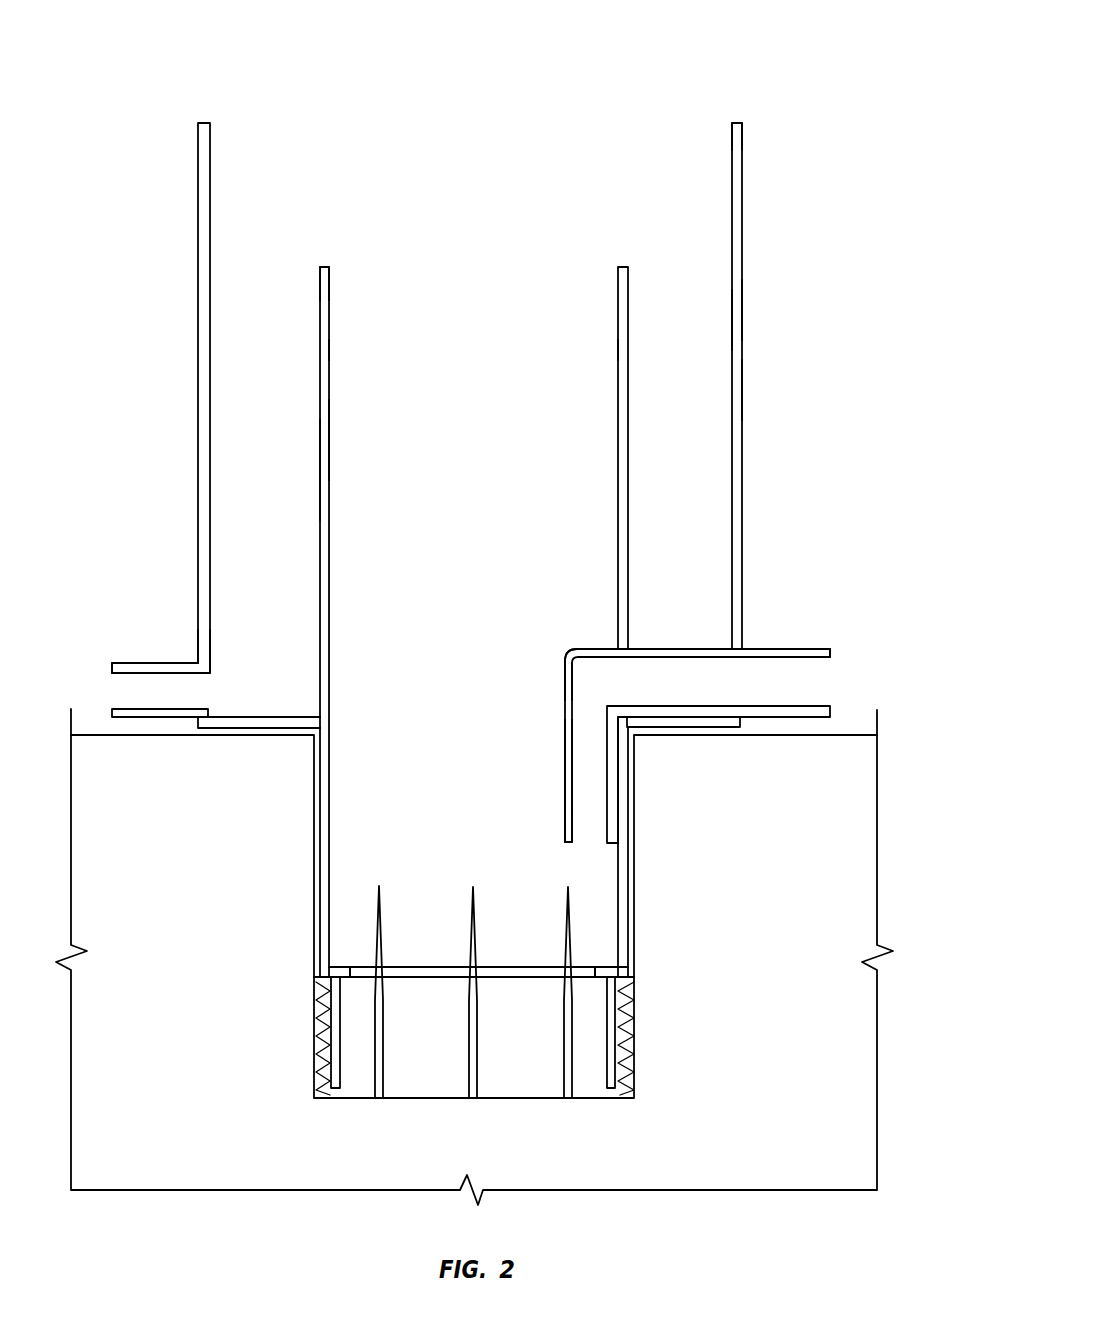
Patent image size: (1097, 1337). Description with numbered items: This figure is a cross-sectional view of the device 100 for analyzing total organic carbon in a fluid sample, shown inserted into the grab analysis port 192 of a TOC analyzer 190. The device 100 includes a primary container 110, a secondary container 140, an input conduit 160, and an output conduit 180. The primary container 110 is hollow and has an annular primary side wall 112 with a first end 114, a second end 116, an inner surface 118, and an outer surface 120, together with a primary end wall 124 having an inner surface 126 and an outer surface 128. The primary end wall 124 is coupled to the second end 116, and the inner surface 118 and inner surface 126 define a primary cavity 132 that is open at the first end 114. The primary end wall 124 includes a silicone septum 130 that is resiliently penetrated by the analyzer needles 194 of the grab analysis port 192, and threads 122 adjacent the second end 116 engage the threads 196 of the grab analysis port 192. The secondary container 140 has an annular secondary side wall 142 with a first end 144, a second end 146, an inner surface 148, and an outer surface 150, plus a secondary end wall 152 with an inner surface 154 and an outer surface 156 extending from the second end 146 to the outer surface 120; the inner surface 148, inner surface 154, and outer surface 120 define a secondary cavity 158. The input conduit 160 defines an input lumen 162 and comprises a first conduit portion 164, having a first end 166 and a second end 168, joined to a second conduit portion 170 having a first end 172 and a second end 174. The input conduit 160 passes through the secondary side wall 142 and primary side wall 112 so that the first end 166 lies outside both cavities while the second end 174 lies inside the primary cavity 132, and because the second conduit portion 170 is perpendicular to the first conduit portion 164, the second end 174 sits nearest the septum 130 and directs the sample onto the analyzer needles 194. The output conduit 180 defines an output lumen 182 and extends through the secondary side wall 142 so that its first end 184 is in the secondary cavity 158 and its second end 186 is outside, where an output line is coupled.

The device 100 is at (862, 94).
The primary container 110 is at (631, 253).
The primary side wall 112 is at (334, 335).
The first end 114 is at (326, 267).
The second end 116 is at (630, 973).
The inner surface 118 is at (330, 436).
The outer surface 120 is at (319, 461).
The threads 122 is at (331, 1011).
The primary end wall 124 is at (341, 966).
The inner surface 126 is at (600, 975).
The outer surface 128 is at (614, 1008).
The septum 130 is at (435, 964).
The primary cavity 132 is at (463, 346).
The secondary container 140 is at (768, 199).
The secondary side wall 142 is at (746, 388).
The first end 144 is at (738, 122).
The second end 146 is at (741, 722).
The inner surface 148 is at (731, 317).
The outer surface 150 is at (743, 305).
The secondary end wall 152 is at (256, 716).
The inner surface 154 is at (300, 717).
The outer surface 156 is at (273, 729).
The secondary cavity 158 is at (247, 543).
The input conduit 160 is at (780, 586).
The input lumen 162 is at (675, 681).
The first conduit portion 164 is at (796, 646).
The first end 166 is at (831, 652).
The second end 168 is at (585, 650).
The second conduit portion 170 is at (560, 769).
The first end 172 is at (565, 676).
The second end 174 is at (563, 846).
The output conduit 180 is at (158, 651).
The output lumen 182 is at (175, 702).
The first end 184 is at (222, 661).
The second end 186 is at (112, 666).
The TOC analyzer 190 is at (898, 1041).
The grab analysis port 192 is at (350, 1103).
The analyzer needles 194 is at (568, 932).
The threads 196 is at (318, 1066).